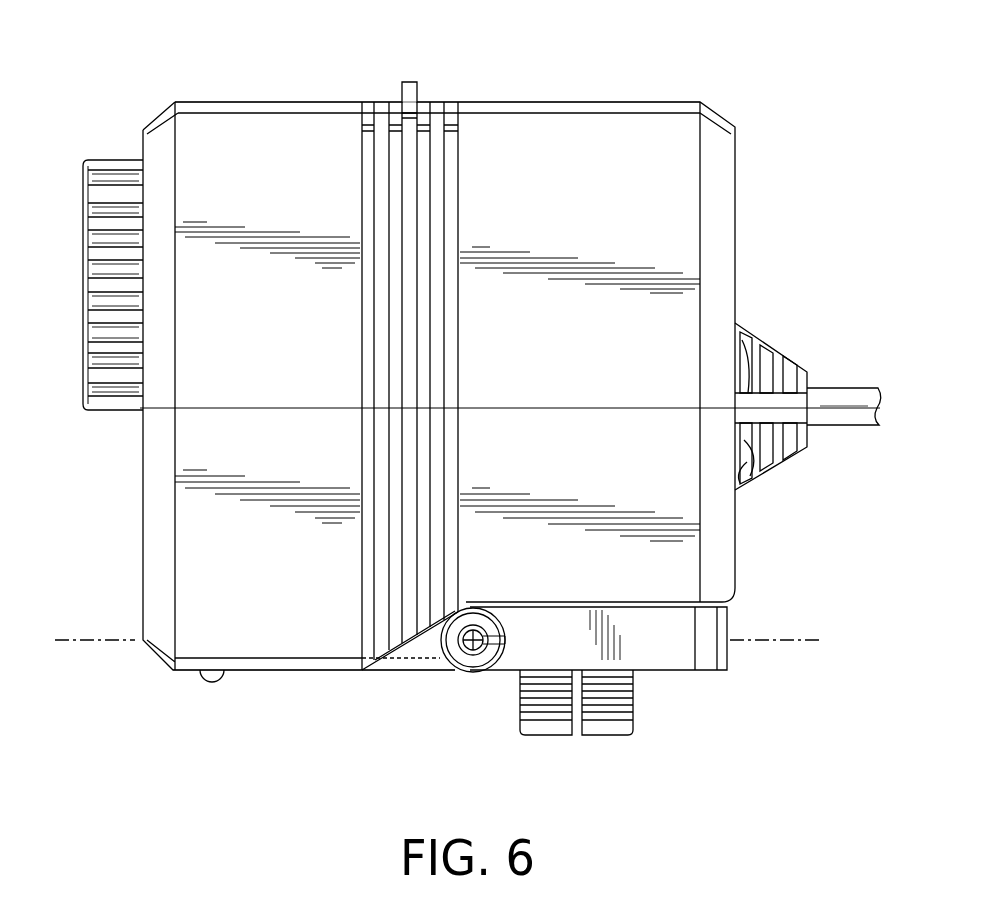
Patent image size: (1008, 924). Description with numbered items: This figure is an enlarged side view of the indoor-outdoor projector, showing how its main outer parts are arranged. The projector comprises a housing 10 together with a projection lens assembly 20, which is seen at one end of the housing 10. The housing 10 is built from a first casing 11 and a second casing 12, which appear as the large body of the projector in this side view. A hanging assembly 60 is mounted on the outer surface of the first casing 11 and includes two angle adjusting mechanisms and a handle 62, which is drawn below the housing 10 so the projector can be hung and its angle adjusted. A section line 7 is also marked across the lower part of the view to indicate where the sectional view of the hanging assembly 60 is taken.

The housing 10 is at (760, 261).
The first casing 11 is at (678, 487).
The second casing 12 is at (663, 212).
The projection lens assembly 20 is at (98, 148).
The hanging assembly 60 is at (724, 687).
The handle 62 is at (647, 645).
The section line 7- 7 is at (65, 592).